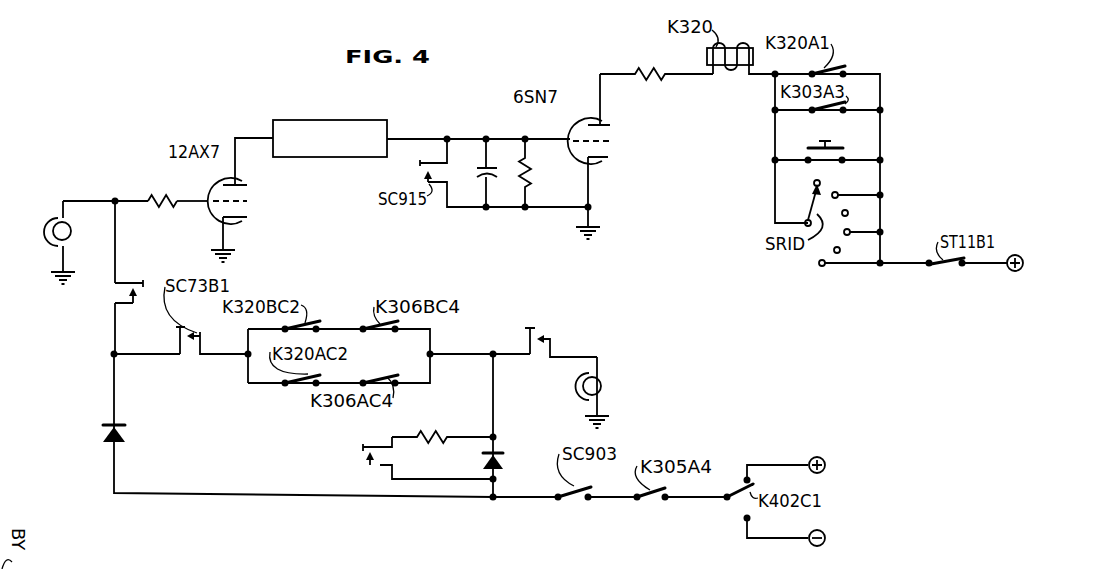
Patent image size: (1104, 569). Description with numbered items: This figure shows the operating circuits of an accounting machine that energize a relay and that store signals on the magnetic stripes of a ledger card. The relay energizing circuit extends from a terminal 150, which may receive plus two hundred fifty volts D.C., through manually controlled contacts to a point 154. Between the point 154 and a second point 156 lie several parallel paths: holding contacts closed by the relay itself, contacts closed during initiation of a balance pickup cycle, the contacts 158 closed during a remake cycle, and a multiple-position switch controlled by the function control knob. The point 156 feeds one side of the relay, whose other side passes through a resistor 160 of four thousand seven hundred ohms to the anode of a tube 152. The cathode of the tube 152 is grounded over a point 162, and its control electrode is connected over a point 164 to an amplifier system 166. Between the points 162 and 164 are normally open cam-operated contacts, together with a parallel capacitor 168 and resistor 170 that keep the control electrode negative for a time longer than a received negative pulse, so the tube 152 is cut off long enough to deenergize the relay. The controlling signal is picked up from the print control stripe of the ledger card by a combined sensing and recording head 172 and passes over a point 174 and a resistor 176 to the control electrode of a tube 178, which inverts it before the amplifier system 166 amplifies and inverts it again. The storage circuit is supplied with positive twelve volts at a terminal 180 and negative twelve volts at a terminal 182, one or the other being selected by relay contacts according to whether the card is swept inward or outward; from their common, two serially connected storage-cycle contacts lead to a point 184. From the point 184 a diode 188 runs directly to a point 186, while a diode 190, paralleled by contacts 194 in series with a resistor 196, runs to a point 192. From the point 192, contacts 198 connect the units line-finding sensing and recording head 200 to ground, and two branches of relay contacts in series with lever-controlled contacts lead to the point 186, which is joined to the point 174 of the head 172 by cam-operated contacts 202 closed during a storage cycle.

The terminal 150 is at (1015, 272).
The tube 152 is at (604, 161).
The point 154 is at (879, 267).
The second point 156 is at (773, 78).
The contacts 158 is at (838, 146).
The resistor 160 is at (644, 70).
The point 162 is at (592, 207).
The point 164 is at (447, 135).
The amplifier system 166 is at (338, 119).
The capacitor 168 is at (490, 162).
The resistor 170 is at (532, 167).
The combined sensing and recording head 172 is at (48, 219).
The point 174 is at (114, 197).
The resistor 176 is at (158, 195).
The tube 178 is at (238, 220).
The terminal 180 is at (816, 457).
The terminal 182 is at (817, 547).
The point 184 is at (492, 503).
The point 186 is at (112, 352).
The diode 188 is at (124, 434).
The diode 190 is at (504, 457).
The point 192 is at (493, 350).
The contacts 194 is at (380, 468).
The resistor 196 is at (440, 433).
The contacts 198 is at (548, 343).
The units line-finding sensing and recording head 200 is at (603, 391).
The cam-operated contacts 202 is at (126, 305).